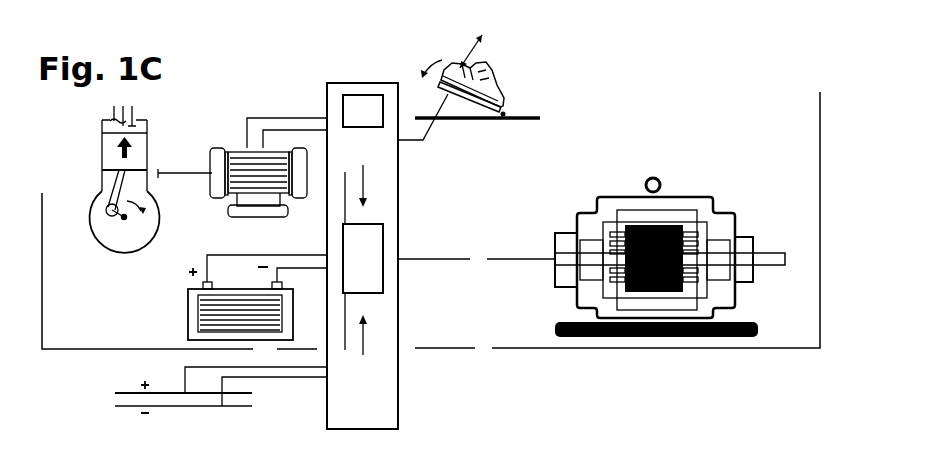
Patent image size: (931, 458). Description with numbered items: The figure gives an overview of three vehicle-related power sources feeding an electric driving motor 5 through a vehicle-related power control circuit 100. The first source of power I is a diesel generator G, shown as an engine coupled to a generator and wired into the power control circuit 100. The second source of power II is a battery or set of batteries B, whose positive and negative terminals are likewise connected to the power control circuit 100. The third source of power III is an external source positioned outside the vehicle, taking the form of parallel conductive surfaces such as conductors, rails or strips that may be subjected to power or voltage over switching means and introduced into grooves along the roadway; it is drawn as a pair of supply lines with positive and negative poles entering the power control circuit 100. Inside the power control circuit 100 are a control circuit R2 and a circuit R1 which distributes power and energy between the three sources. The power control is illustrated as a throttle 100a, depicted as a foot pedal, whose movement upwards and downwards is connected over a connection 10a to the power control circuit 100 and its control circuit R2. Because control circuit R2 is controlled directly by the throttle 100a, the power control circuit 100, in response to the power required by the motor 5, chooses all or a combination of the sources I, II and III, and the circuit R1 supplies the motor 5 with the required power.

The electric driving motor 5 is at (682, 196).
The power control circuit 100 is at (390, 418).
The throttle 100a is at (459, 66).
The connection 10a is at (418, 143).
The circuit distributing power and energy R1 is at (367, 272).
The control circuit R2 is at (352, 102).
The first source of power I is at (152, 175).
The diesel generator G is at (240, 212).
The second source of power II is at (129, 285).
The battery B is at (193, 328).
The third source of power III is at (191, 390).